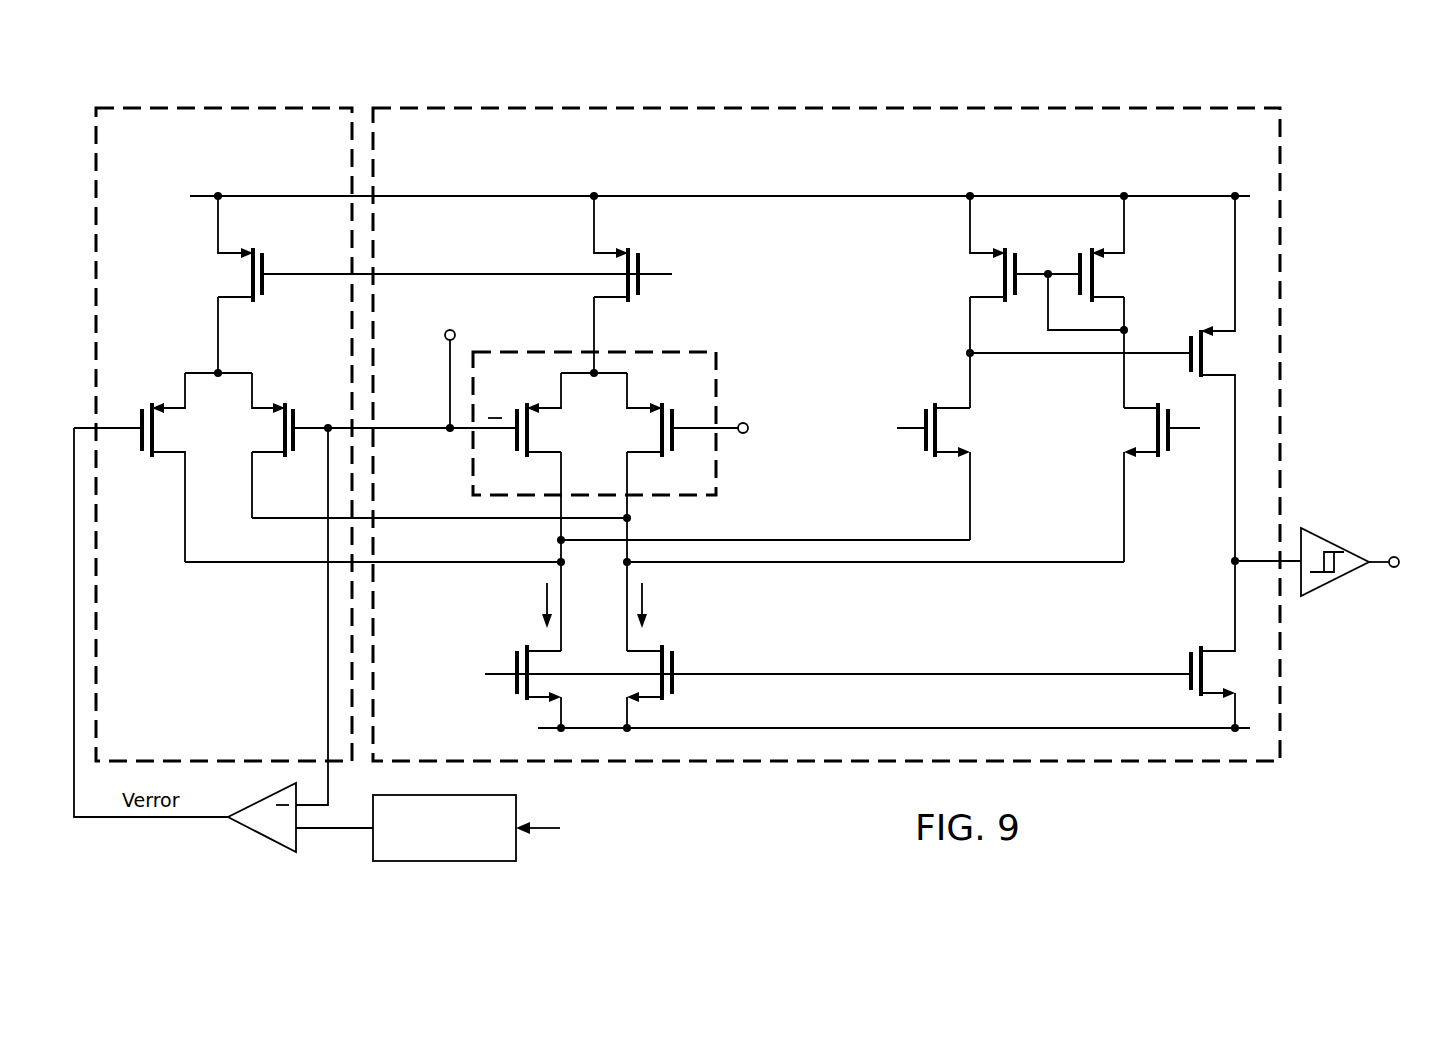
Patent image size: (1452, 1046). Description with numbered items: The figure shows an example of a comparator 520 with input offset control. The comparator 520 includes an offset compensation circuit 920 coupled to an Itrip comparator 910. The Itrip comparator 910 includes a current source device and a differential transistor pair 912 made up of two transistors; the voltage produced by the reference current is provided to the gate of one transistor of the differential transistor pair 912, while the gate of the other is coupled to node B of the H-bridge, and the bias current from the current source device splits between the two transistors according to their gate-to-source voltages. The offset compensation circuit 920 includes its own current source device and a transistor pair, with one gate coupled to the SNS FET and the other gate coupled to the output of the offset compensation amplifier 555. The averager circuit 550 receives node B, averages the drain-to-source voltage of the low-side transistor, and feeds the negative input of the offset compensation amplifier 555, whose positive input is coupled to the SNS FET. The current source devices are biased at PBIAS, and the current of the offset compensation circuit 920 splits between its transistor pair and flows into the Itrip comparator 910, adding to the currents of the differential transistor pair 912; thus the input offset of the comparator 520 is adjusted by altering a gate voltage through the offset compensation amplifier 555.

The comparator 520 is at (484, 70).
The offset compensation circuit 920 is at (181, 104).
The Itrip comparator 910 is at (962, 104).
The differential transistor pair 912 is at (725, 381).
The offset compensation amplifier 555 is at (259, 838).
The averager circuit 550 is at (445, 862).